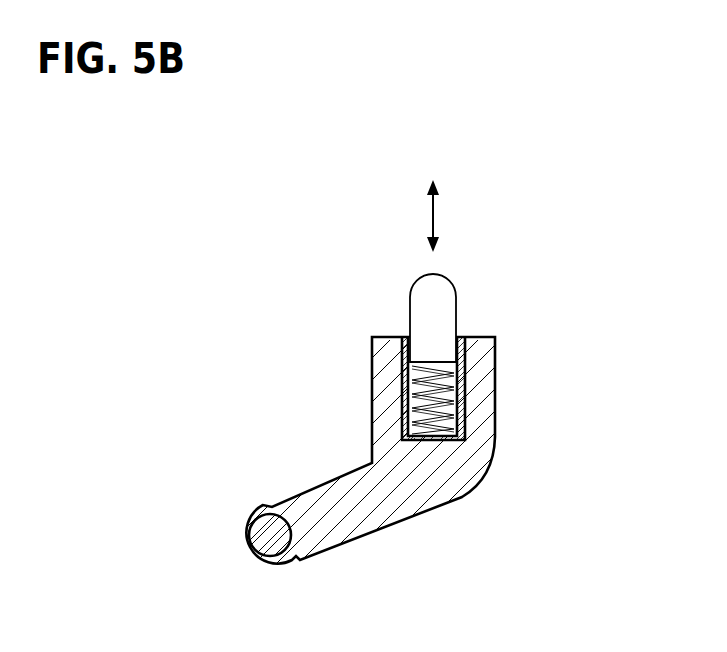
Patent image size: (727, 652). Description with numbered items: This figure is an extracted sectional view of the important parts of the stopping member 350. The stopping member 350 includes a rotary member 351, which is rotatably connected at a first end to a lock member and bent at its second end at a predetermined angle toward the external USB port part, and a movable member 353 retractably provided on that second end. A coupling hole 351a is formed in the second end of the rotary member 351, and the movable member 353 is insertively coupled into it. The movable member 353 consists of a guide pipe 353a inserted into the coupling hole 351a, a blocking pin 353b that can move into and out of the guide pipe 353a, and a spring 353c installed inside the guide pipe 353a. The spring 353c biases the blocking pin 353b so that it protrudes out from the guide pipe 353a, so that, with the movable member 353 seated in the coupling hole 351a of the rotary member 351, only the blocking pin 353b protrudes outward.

The stopping member 350 is at (414, 409).
The rotary member 351 is at (488, 438).
The coupling hole 351a is at (408, 364).
The movable member 353 is at (535, 341).
The guide pipe 353a is at (494, 338).
The blocking pin 353b is at (445, 287).
The spring 353c is at (452, 391).